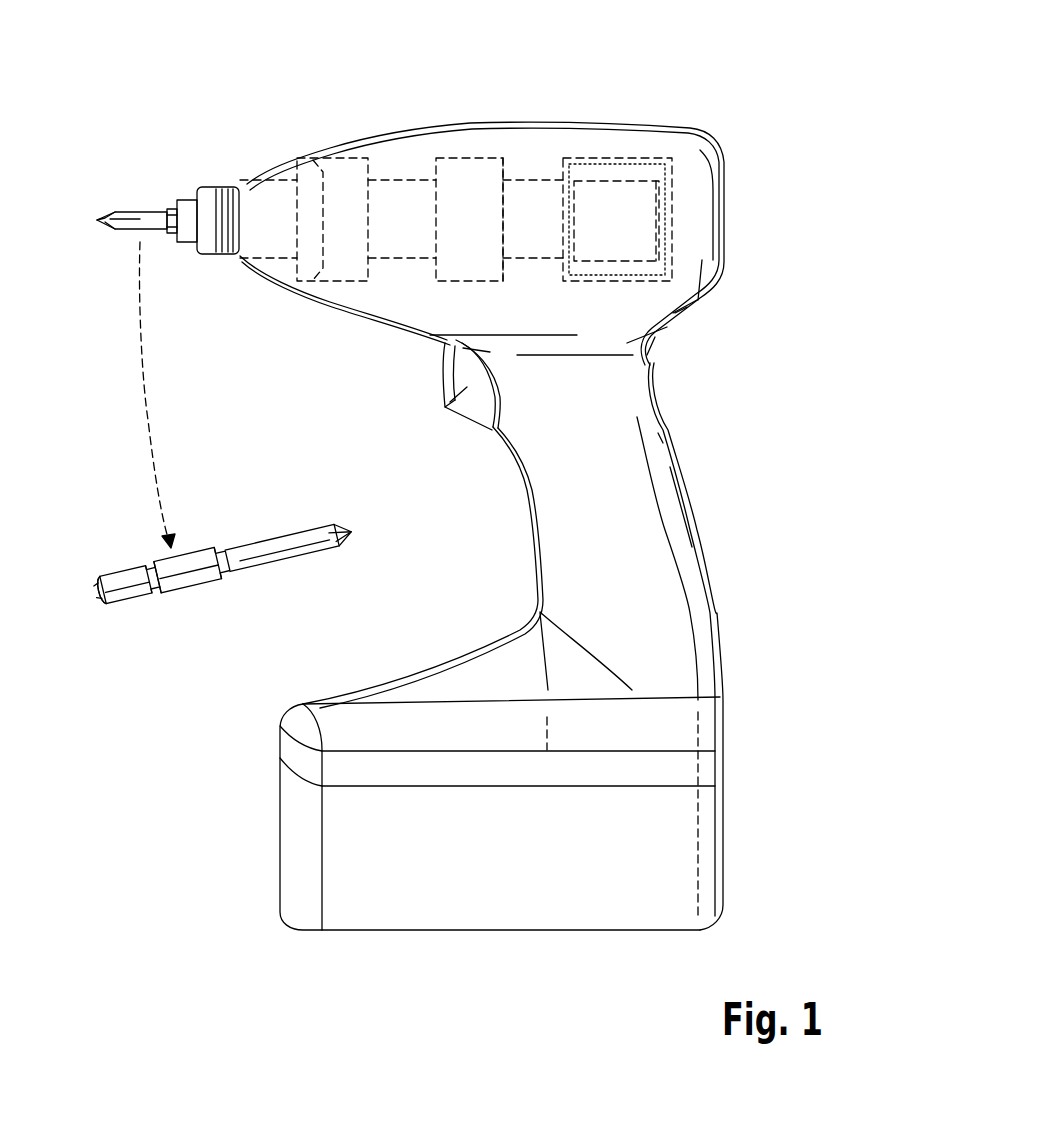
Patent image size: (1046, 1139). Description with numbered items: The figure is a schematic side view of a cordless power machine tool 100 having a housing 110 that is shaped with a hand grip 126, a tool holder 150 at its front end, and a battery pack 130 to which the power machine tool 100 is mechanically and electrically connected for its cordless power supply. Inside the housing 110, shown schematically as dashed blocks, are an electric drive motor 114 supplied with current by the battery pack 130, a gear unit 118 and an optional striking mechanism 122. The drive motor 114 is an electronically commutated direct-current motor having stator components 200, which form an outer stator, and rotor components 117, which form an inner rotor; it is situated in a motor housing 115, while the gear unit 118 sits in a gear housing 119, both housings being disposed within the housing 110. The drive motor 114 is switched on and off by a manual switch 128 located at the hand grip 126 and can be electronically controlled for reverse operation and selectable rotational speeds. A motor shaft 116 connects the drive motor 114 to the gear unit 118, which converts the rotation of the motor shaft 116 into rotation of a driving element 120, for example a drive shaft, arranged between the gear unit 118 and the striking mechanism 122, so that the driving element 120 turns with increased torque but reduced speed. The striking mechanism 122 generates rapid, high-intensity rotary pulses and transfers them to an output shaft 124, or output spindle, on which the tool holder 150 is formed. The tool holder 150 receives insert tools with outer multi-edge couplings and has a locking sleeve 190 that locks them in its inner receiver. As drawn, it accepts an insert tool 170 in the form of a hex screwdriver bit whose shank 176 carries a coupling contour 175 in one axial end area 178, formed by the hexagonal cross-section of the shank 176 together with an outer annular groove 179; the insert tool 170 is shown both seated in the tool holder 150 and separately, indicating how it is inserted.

The power machine tool 100 is at (709, 104).
The housing 110 is at (694, 273).
The electric drive motor 114 is at (655, 212).
The motor housing 115 is at (647, 215).
The motor shaft 116 is at (544, 190).
The rotor components 117 is at (672, 163).
The gear unit 118 is at (467, 170).
The gear housing 119 is at (500, 162).
The driving element 120 is at (425, 190).
The striking mechanism 122 is at (348, 172).
The output shaft 124 is at (263, 186).
The hand grip 126 is at (700, 645).
The manual switch 128 is at (447, 393).
The battery pack 130 is at (707, 837).
The tool holder 150 is at (190, 192).
The insert tool 170 is at (124, 233).
The coupling contour 175 is at (192, 596).
The shank 176 is at (118, 585).
The axial end area 178 is at (92, 600).
The outer annular groove 179 is at (152, 598).
The locking sleeve 190 is at (205, 188).
The stator components 200 is at (613, 180).